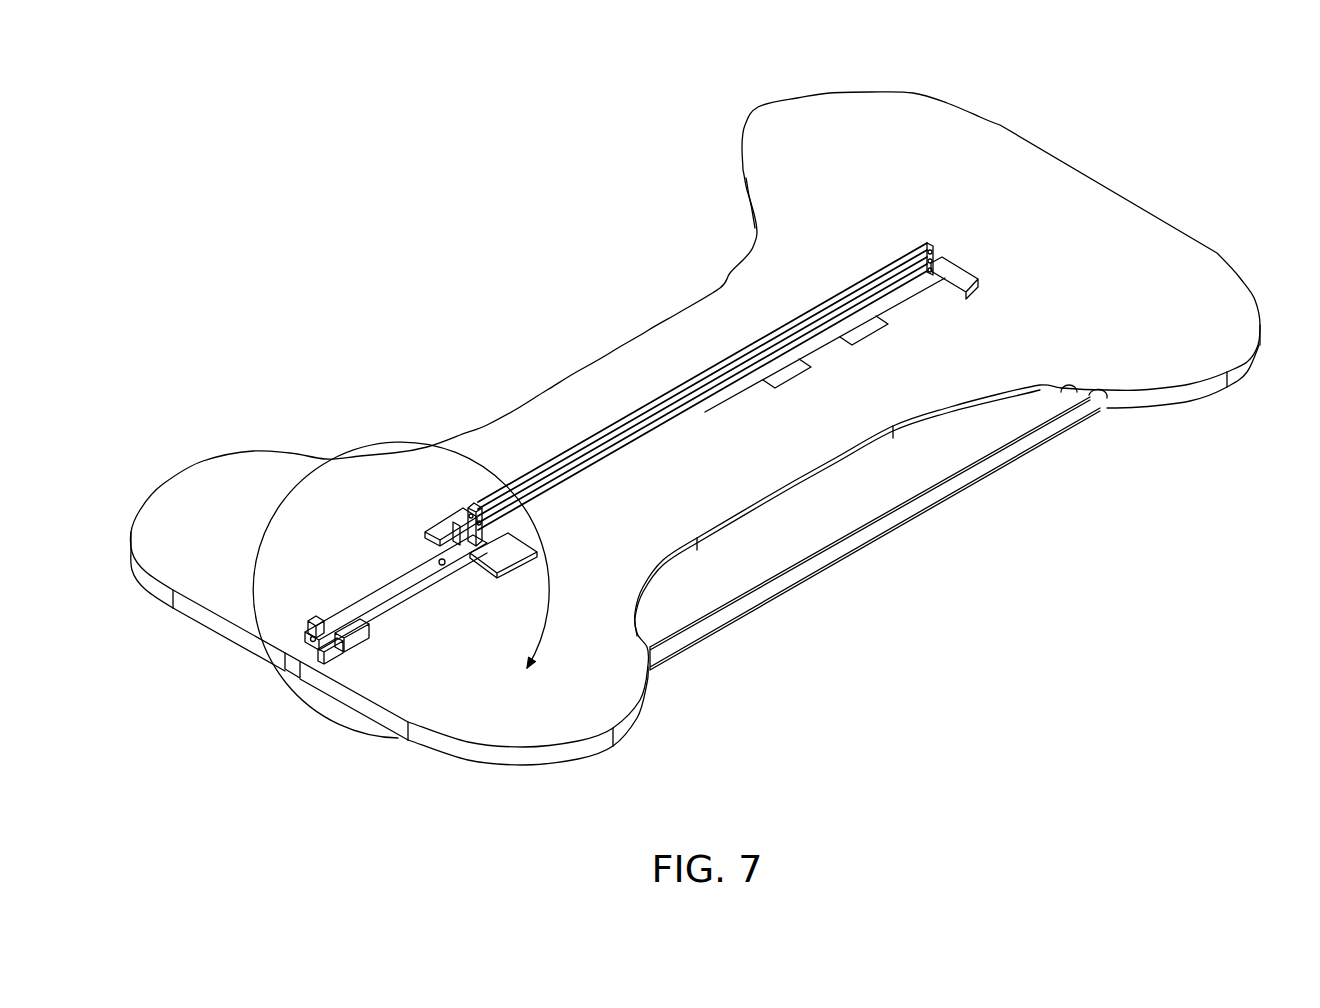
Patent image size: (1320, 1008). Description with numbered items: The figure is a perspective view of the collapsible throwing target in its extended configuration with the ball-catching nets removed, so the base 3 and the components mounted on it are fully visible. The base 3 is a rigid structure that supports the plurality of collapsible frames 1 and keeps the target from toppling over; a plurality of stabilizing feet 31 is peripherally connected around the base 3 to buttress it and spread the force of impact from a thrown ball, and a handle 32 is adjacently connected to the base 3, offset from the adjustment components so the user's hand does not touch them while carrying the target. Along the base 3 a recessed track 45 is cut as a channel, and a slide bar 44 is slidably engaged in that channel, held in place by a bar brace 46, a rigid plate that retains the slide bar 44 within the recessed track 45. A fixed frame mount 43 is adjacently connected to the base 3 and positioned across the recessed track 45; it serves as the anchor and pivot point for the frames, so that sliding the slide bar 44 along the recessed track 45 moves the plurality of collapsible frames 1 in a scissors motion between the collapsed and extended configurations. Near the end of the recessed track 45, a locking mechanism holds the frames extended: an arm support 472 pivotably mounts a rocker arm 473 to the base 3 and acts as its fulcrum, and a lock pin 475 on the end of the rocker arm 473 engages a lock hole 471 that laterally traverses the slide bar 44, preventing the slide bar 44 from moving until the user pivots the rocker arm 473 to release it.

The plurality of collapsible frames 1 is at (712, 441).
The base 3 is at (1126, 172).
The plurality of stabilizing feet 31 is at (800, 120).
The handle 32 is at (788, 578).
The fixed frame mount 43 is at (446, 524).
The slide bar 44 is at (455, 562).
The recessed track 45 is at (376, 608).
The bar brace 46 is at (800, 374).
The lock hole 471 is at (439, 559).
The arm support 472 is at (344, 661).
The rocker arm 473 is at (366, 648).
The lock pin 475 is at (311, 636).